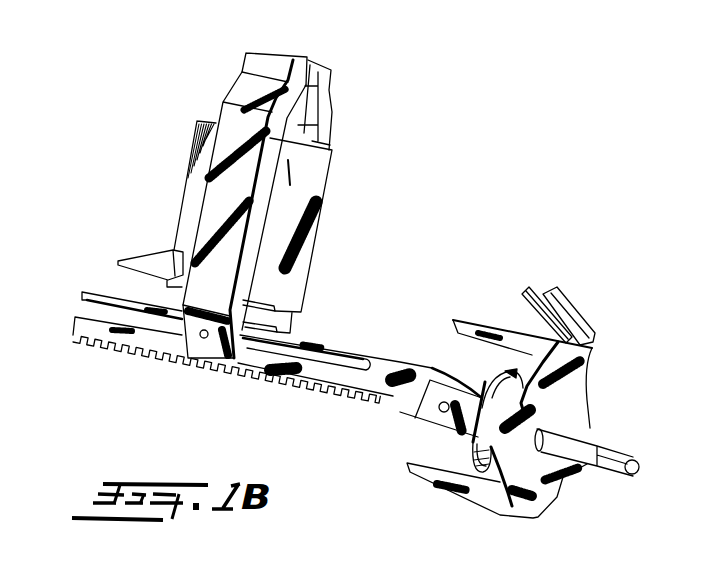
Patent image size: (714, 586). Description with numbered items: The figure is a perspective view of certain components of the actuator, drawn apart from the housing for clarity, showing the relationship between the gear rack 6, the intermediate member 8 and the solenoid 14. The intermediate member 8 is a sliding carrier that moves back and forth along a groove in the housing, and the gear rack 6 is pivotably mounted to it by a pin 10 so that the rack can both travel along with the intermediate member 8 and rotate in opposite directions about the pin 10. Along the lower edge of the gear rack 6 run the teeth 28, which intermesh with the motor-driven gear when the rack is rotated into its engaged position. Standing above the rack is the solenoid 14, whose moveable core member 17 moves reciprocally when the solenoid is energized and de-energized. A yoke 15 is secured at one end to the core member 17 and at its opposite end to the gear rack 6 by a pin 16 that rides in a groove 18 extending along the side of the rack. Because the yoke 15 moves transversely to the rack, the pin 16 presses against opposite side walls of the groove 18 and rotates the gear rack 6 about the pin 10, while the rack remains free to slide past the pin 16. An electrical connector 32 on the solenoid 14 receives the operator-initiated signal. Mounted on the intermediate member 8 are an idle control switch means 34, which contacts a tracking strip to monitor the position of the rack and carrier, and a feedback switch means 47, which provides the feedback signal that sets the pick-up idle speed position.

The gear rack 6 is at (374, 353).
The intermediate member 8 is at (480, 320).
The pin 10 is at (439, 408).
The solenoid 14 is at (317, 193).
The yoke 15 is at (327, 107).
The pin 16 is at (203, 339).
The moveable core member 17 is at (267, 49).
The groove 18 is at (95, 312).
The teeth 28 is at (153, 360).
The electrical connector 32 is at (125, 262).
The idle control switch means 34 is at (531, 289).
The feedback switch means 47 is at (563, 303).